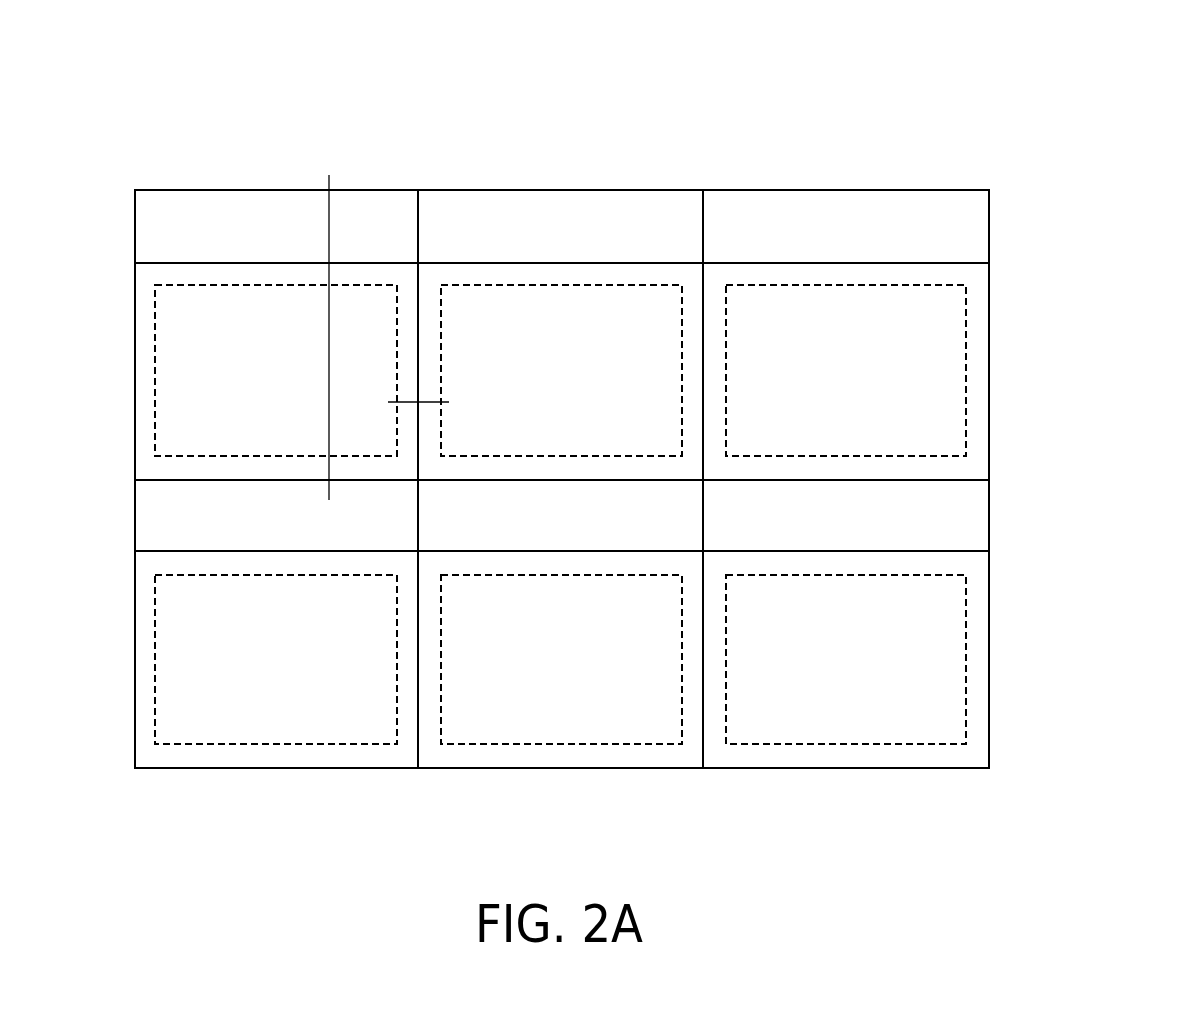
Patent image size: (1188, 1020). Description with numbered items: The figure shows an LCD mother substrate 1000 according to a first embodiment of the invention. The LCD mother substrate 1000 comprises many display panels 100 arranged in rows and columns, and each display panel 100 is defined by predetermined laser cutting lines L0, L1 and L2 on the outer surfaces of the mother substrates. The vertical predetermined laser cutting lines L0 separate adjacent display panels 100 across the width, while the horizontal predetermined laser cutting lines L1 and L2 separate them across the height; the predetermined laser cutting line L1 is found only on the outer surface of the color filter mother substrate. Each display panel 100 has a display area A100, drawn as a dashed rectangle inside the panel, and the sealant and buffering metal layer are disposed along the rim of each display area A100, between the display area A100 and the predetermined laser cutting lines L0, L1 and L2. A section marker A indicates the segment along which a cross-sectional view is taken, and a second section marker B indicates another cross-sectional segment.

The LCD mother substrate 1000 is at (1178, 88).
The display panel 100 is at (135, 478).
The display area A100 is at (315, 425).
The predetermined laser cutting line L0 is at (417, 755).
The predetermined laser cutting line L1 is at (950, 262).
The predetermined laser cutting line L2 is at (960, 481).
The segment AA' A is at (388, 402).
The section line B-B' B is at (329, 175).